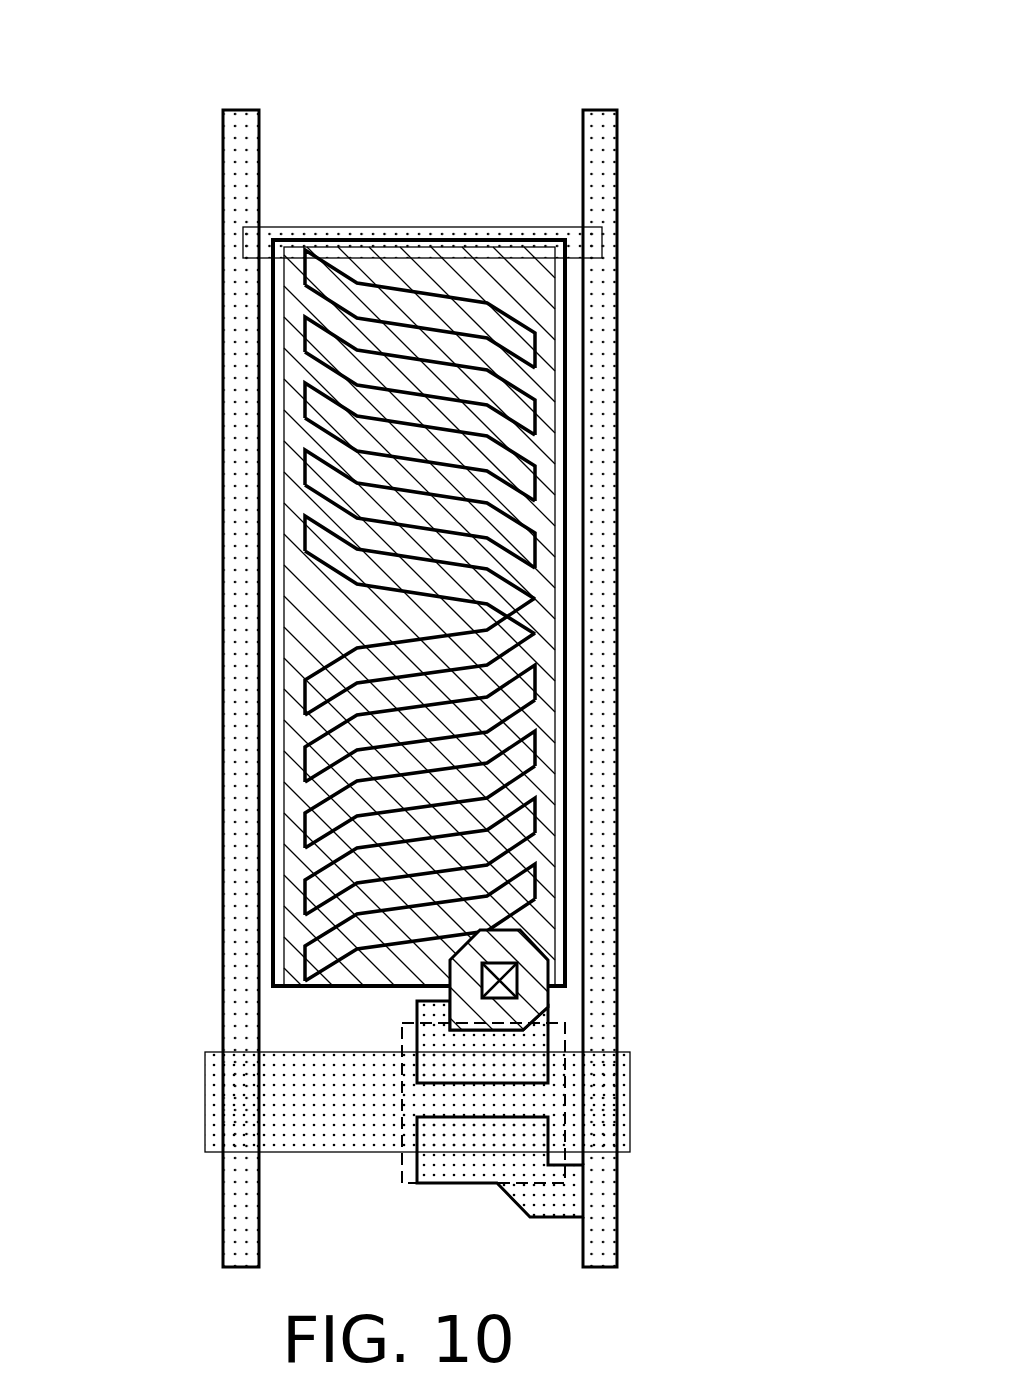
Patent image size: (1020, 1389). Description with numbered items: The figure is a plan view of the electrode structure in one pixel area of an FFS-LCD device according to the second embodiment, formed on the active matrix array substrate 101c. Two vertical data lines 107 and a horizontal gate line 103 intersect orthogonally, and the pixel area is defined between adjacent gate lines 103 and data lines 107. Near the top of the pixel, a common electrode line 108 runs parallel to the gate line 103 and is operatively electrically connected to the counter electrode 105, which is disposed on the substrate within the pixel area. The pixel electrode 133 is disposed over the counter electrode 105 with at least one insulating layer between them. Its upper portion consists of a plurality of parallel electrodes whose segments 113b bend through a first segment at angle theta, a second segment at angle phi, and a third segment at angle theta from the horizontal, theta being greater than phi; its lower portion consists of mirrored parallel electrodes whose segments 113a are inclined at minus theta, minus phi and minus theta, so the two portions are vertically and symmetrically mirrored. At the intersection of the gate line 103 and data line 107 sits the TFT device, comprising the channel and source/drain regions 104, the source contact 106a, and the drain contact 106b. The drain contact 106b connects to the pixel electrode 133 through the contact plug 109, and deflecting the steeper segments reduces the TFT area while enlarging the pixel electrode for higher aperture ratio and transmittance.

The active matrix array substrate 101c is at (547, 78).
The data line 107 is at (240, 425).
The common electrode line 108 is at (580, 240).
The pixel electrode 133 is at (310, 615).
The counter electrode 105 is at (568, 612).
The upper portion electrode segment 113b is at (380, 538).
The lower portion electrode segment 113a is at (303, 693).
The drain contact 106b is at (527, 1040).
The contact plug 109 is at (520, 977).
The source contact 106a is at (525, 1143).
The gate line 103 is at (280, 1102).
The channel and source/drain regions 104 is at (548, 1102).